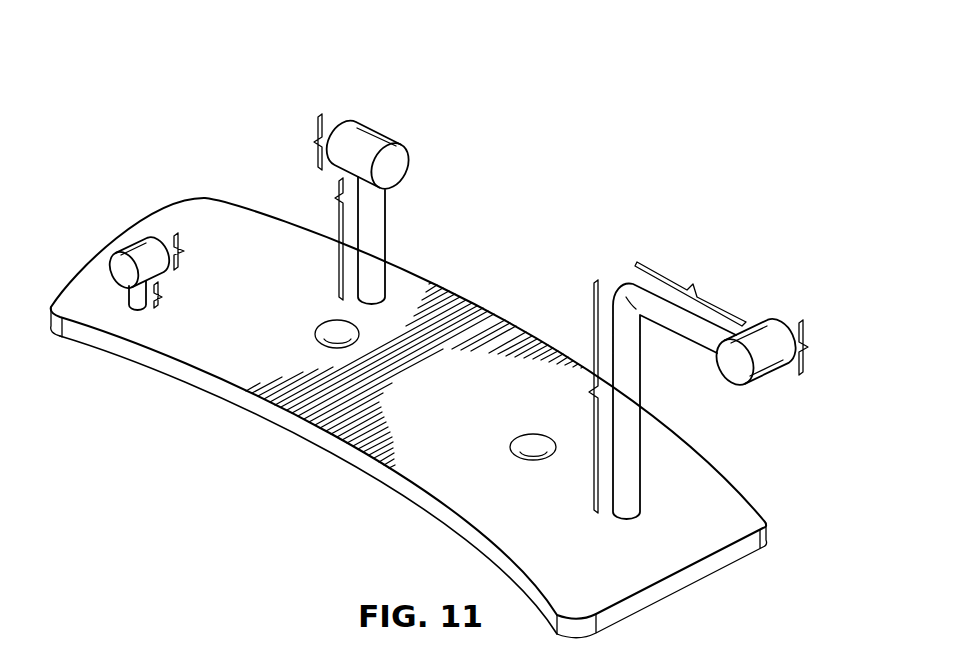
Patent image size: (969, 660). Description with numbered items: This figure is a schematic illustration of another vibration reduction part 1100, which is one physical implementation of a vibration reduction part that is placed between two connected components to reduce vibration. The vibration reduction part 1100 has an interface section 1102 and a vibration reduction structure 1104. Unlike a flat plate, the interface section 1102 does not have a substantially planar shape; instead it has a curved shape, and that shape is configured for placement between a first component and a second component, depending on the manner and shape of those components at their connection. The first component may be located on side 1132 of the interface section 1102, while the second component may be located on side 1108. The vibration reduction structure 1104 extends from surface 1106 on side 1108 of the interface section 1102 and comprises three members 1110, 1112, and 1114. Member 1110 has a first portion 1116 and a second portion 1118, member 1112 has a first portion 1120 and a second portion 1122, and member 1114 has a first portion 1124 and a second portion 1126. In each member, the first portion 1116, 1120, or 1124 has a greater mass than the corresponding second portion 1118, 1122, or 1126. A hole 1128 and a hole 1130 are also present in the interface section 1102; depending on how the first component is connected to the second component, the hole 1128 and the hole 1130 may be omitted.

The vibration reduction part 1100 is at (635, 72).
The interface section 1102 is at (236, 420).
The vibration reduction structure 1104 is at (210, 115).
The surface 1106 is at (420, 282).
The side 1108 is at (470, 294).
The member 1110 is at (763, 388).
The member 1112 is at (389, 132).
The member 1114 is at (124, 252).
The first portion 1116 is at (835, 347).
The second portion 1118 is at (636, 383).
The first portion 1120 is at (287, 142).
The second portion 1122 is at (308, 239).
The first portion 1124 is at (210, 251).
The second portion 1126 is at (190, 295).
The hole 1128 is at (323, 327).
The hole 1130 is at (514, 438).
The side 1132 is at (357, 467).